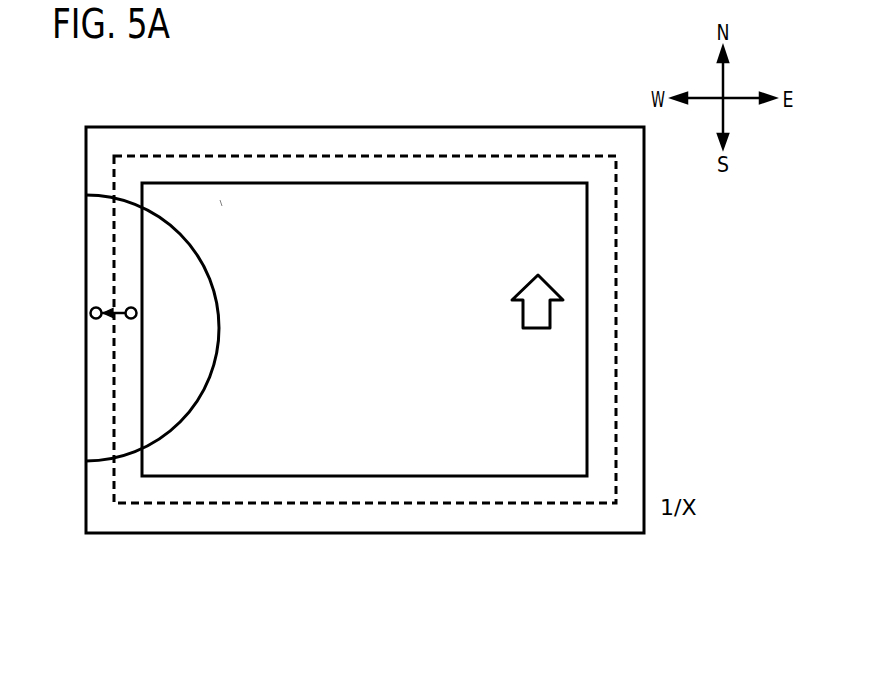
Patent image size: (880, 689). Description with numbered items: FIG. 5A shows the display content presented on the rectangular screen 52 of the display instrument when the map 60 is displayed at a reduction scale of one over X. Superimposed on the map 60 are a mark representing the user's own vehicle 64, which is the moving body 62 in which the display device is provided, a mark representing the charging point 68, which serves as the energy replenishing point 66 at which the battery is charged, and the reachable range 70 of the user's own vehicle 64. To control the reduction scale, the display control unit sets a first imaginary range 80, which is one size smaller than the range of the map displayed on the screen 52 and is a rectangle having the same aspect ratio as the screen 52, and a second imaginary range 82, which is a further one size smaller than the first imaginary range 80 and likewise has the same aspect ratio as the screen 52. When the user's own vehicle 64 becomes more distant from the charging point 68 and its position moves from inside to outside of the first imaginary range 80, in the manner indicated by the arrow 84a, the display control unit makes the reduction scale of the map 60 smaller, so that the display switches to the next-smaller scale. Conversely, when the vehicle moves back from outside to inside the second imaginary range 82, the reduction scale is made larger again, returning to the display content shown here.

The screen 52 is at (550, 127).
The first imaginary range 80 is at (295, 156).
The second imaginary range 82 is at (365, 183).
The map 60 is at (220, 203).
The reachable range 70 is at (205, 390).
The arrow 84a is at (105, 311).
The user's own vehicle 64 is at (225, 285).
The moving body 62 is at (135, 307).
The charging point 68 is at (492, 286).
The energy replenishing point 66 is at (536, 277).